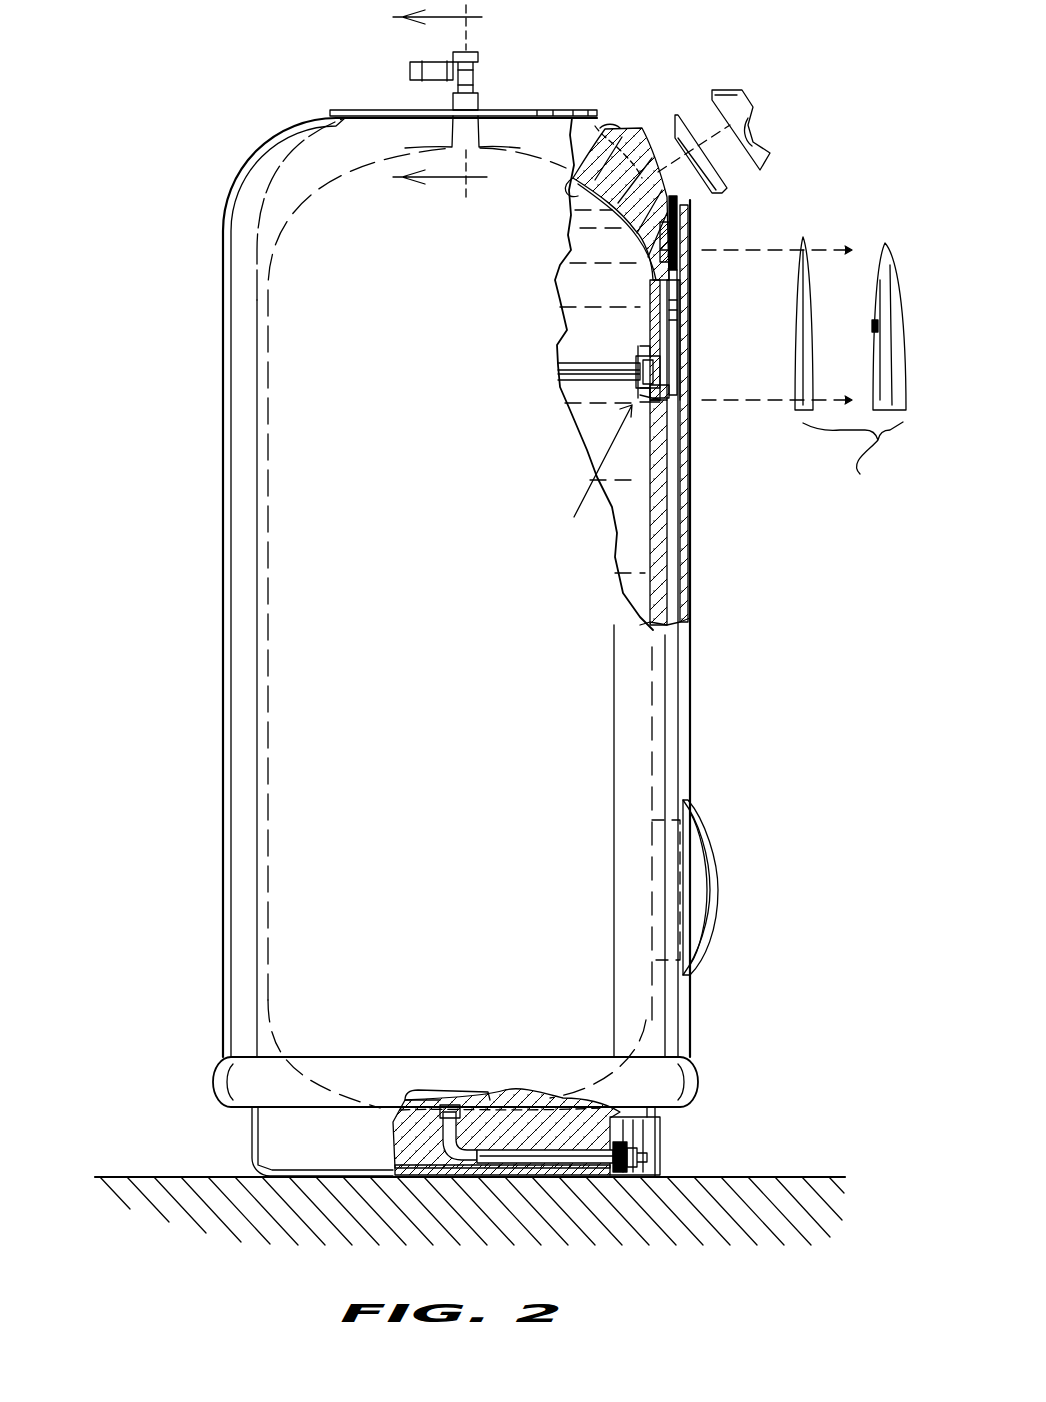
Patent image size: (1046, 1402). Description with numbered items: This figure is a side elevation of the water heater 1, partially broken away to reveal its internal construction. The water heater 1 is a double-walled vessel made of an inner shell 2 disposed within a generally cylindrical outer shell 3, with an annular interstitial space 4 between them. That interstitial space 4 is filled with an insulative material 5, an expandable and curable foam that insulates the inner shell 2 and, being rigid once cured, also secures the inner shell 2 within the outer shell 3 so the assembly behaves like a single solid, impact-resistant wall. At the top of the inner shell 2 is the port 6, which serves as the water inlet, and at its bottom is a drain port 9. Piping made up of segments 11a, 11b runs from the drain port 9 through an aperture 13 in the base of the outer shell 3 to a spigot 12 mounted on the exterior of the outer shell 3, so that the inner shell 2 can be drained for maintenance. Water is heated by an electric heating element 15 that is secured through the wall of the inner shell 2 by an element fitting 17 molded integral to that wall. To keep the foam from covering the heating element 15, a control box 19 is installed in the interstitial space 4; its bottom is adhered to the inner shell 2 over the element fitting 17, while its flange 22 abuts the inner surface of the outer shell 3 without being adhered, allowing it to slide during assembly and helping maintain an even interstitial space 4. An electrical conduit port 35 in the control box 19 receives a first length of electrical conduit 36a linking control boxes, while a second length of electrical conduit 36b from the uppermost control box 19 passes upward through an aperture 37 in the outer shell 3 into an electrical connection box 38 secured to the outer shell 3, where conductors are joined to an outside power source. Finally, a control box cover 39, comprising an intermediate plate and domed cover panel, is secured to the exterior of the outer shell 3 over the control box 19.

The water heater 1 is at (201, 106).
The inner shell 2 is at (285, 235).
The outer shell 3 is at (222, 640).
The interstitial space 4 is at (560, 1120).
The insulative material 5 is at (620, 128).
The port 6 is at (440, 101).
The drain port 9 is at (418, 1105).
The piping segment 11a is at (397, 1147).
The piping segment 11b is at (515, 1105).
The spigot 12 is at (660, 1148).
The aperture 13 is at (594, 1180).
The electric heating element 15 is at (606, 362).
The element fitting 17 is at (600, 463).
The control box 19 is at (690, 318).
The flange 22 is at (690, 443).
The electrical conduit port 35 is at (696, 262).
The first length of electrical conduit 36a is at (692, 545).
The second length of electrical conduit 36b is at (690, 210).
The aperture 37 is at (700, 180).
The electrical connection box 38 is at (770, 94).
The control box cover 39 is at (734, 855).